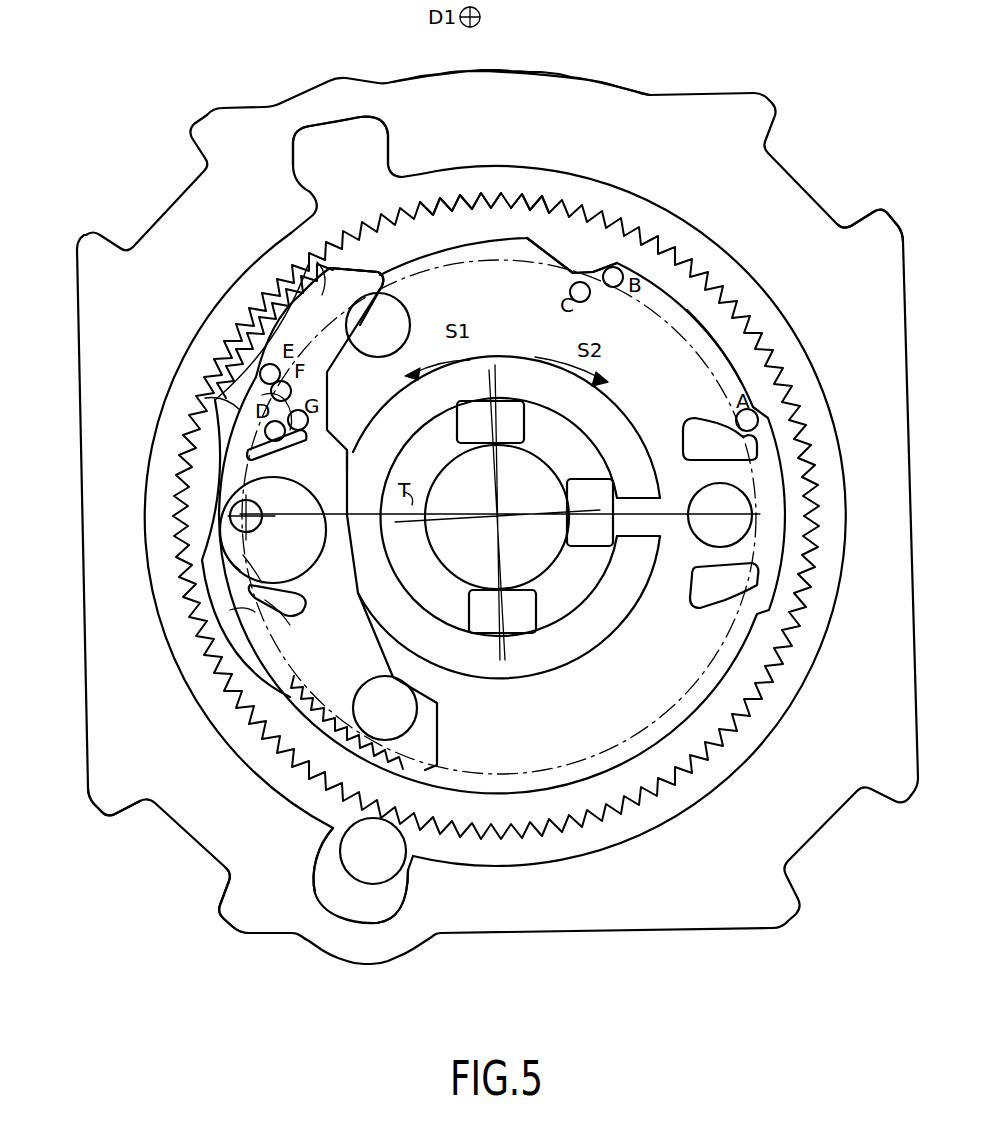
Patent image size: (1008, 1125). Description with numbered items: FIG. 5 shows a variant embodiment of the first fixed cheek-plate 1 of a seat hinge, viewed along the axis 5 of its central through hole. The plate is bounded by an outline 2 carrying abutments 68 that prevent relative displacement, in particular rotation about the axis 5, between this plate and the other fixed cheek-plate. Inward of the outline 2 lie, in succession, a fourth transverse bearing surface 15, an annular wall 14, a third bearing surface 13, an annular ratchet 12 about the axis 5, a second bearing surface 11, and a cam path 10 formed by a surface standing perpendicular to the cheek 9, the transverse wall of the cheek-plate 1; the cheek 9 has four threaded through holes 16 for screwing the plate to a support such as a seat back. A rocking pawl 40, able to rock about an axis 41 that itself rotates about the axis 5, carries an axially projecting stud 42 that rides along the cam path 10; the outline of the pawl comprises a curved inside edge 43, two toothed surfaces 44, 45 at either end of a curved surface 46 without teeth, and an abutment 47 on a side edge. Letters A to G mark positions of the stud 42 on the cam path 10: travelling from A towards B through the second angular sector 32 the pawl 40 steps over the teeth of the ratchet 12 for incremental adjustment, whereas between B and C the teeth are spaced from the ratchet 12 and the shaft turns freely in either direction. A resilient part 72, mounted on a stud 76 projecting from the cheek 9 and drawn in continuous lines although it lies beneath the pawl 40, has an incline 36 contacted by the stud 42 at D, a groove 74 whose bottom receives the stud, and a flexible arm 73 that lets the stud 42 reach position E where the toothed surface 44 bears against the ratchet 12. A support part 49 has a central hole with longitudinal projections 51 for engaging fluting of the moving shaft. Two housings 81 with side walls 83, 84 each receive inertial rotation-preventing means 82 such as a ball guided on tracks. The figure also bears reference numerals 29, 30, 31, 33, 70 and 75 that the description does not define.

The first fixed cheek-plate 1 is at (605, 68).
The outline 2 is at (500, 72).
The axis 5 is at (500, 513).
The cheek 9 is at (486, 312).
The cam path 10 is at (748, 338).
The second bearing surface 11 is at (477, 220).
The annular ratchet 12 is at (667, 223).
The third bearing surface 13 is at (522, 182).
The annular wall 14 is at (705, 227).
The fourth bearing surface 15 is at (878, 243).
The threaded through holes 16 is at (397, 330).
The tooth gap 29 is at (448, 190).
The notch 30 is at (573, 268).
The notch flank 31 is at (595, 273).
The second angular sector 32 is at (687, 310).
The guide slot 33 is at (752, 440).
The incline 36 is at (233, 485).
The rocking pawl 40 is at (258, 763).
The rocking axis 41 is at (262, 535).
The stud 42 is at (328, 392).
The curved surface 43 is at (368, 633).
The toothed surface 44 is at (318, 257).
The toothed surface 45 is at (313, 832).
The curved surface without teeth 46 is at (235, 520).
The abutment 47 is at (362, 287).
The support part 49 is at (590, 655).
The longitudinal projections 51 is at (500, 413).
The abutments 68 is at (105, 795).
The hub 70 is at (457, 695).
The resilient part 72 is at (230, 538).
The arm 73 is at (260, 430).
The groove 74 is at (205, 398).
The stop 75 is at (330, 460).
The stud 76 is at (243, 555).
The housings 81 is at (327, 145).
The inertial type rotation-preventing means 82 is at (383, 870).
The side wall 83 is at (283, 153).
The side wall 84 is at (320, 885).